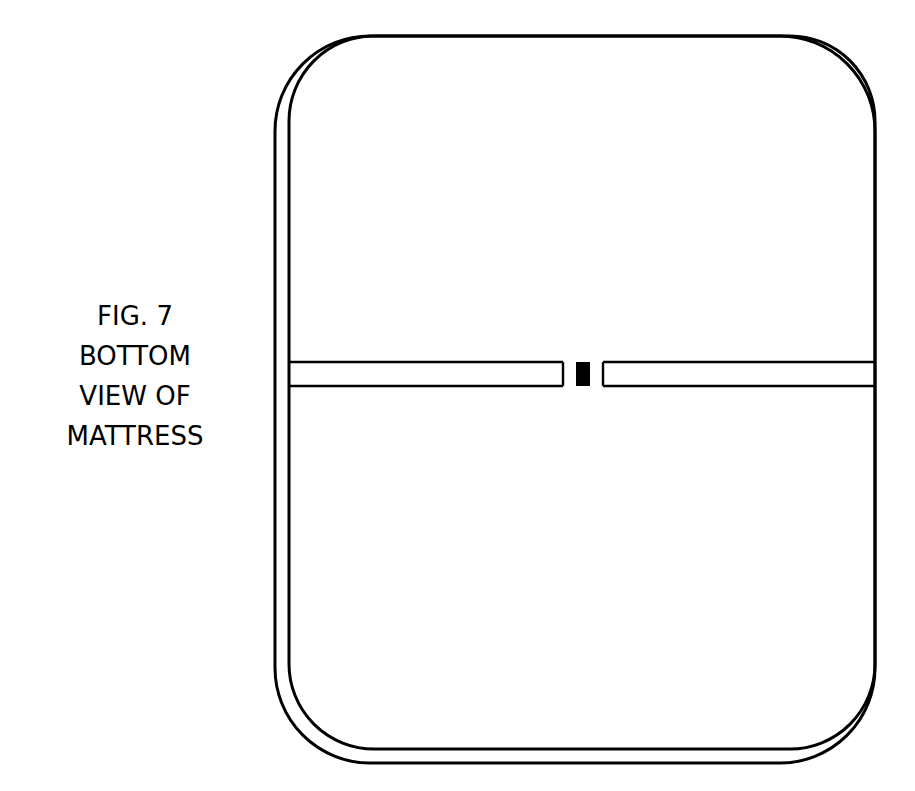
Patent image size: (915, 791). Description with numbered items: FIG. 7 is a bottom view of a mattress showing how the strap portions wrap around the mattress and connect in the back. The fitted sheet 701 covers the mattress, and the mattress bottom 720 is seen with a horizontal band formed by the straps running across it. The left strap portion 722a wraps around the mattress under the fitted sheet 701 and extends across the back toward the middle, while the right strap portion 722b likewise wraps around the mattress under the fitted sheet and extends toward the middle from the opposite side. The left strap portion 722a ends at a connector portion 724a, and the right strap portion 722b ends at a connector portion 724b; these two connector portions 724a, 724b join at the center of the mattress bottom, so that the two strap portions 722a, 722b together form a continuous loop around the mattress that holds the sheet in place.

The fitted sheet 701 is at (275, 150).
The bottom surface of mattress 720 is at (590, 108).
The left strap portion 722a is at (458, 368).
The right strap portion 722b is at (714, 368).
The connector portion 724a is at (572, 373).
The connector portion 724b is at (595, 373).